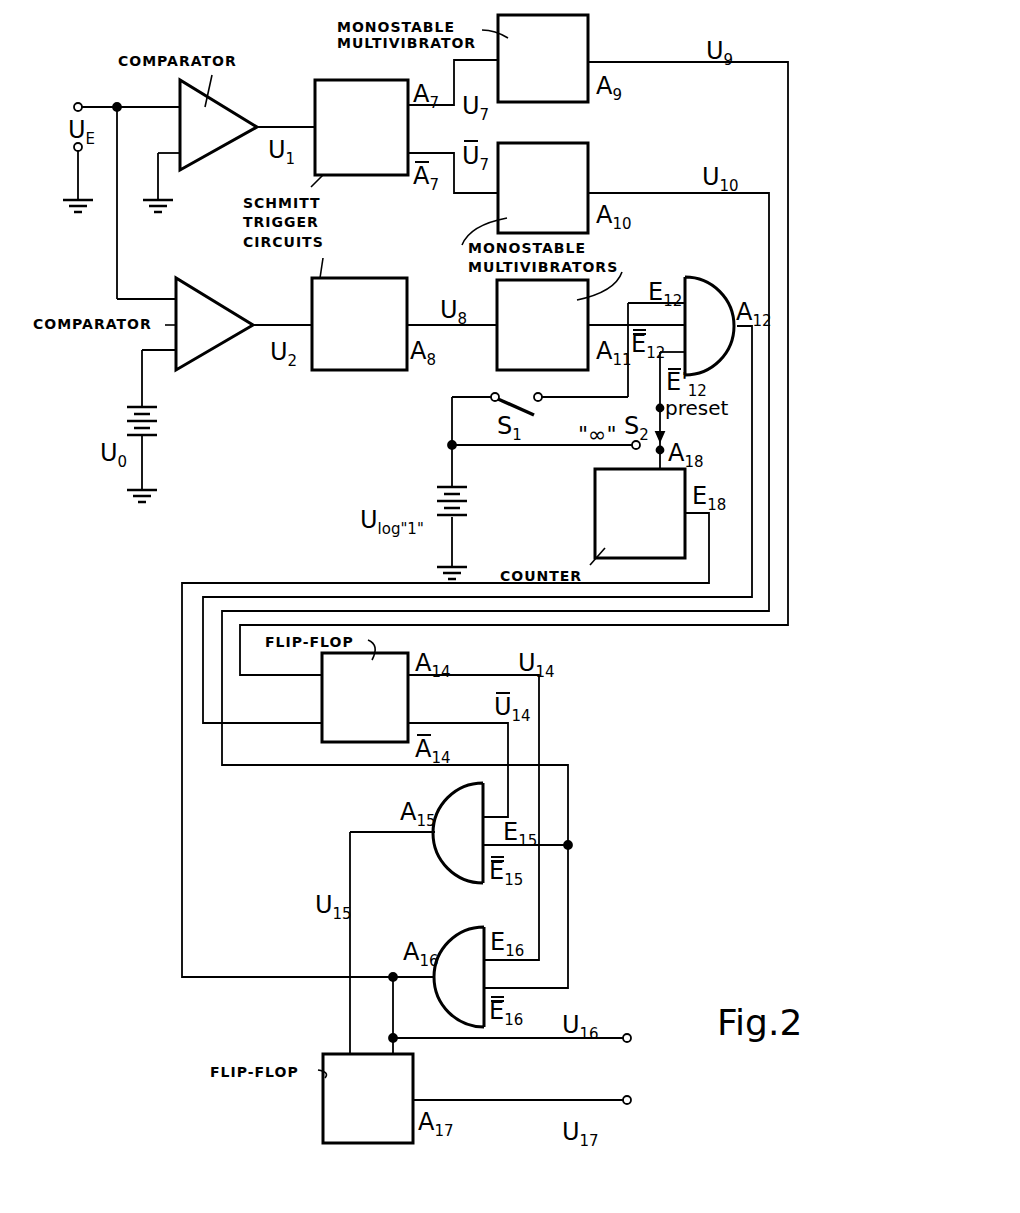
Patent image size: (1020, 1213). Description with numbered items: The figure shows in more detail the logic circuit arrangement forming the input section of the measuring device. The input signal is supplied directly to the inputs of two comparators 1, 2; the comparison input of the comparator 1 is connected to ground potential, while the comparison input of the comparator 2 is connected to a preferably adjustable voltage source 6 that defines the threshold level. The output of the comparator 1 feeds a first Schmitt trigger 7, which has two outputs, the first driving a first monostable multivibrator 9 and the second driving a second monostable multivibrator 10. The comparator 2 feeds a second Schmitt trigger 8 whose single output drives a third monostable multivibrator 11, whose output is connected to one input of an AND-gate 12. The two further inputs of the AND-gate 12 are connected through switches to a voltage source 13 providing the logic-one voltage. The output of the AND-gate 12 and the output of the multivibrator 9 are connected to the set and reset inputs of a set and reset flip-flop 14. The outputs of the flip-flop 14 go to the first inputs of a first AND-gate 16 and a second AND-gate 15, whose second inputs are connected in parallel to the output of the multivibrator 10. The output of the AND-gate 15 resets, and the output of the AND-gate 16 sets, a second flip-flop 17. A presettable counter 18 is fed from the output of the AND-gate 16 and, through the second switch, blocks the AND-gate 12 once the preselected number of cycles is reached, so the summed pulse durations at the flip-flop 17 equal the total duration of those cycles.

The comparator 1 is at (218, 125).
The comparator 2 is at (214, 324).
The voltage source 6 is at (150, 432).
The Schmitt trigger 7 is at (361, 127).
The Schmitt trigger 8 is at (359, 324).
The monostable multivibrator 9 is at (543, 58).
The monostable multivibrator 10 is at (543, 188).
The monostable multivibrator 11 is at (542, 325).
The AND-gate 12 is at (709, 326).
The voltage source 13 is at (462, 513).
The flip-flop 14 is at (365, 697).
The AND-gate 15 is at (458, 833).
The AND-gate 16 is at (459, 977).
The flip-flop 17 is at (368, 1098).
The presettable counter 18 is at (640, 513).